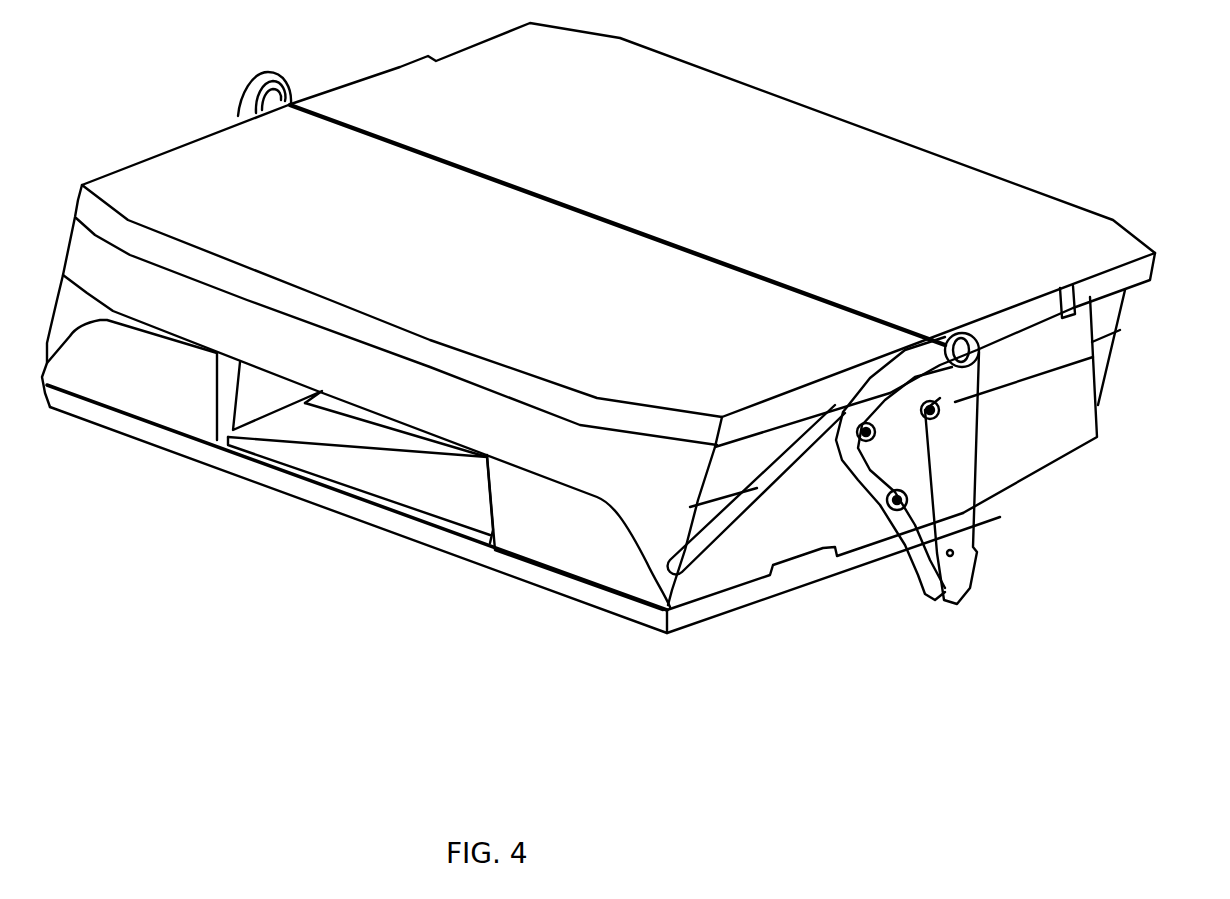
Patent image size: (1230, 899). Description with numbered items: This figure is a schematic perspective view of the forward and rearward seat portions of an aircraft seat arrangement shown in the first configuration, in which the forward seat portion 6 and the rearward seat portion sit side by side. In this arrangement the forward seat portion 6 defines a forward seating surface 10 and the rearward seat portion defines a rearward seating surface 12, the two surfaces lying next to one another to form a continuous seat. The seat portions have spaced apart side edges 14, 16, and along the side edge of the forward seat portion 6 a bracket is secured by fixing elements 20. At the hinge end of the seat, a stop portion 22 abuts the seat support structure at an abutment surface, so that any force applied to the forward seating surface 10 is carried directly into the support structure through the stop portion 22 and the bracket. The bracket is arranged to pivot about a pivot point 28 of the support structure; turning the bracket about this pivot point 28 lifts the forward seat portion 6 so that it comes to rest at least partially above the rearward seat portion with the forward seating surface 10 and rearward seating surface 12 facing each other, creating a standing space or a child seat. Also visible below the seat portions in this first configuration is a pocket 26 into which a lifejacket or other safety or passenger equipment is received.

The forward seat portion 6 is at (560, 525).
The forward seating surface 10 is at (382, 396).
The rearward seating surface 12 is at (618, 235).
The side edge 14 is at (721, 571).
The side edge 16 is at (1018, 443).
The fixing elements 20 is at (927, 418).
The stop portion 22 is at (975, 585).
The pocket 26 is at (383, 462).
The pivot point 28 is at (972, 360).